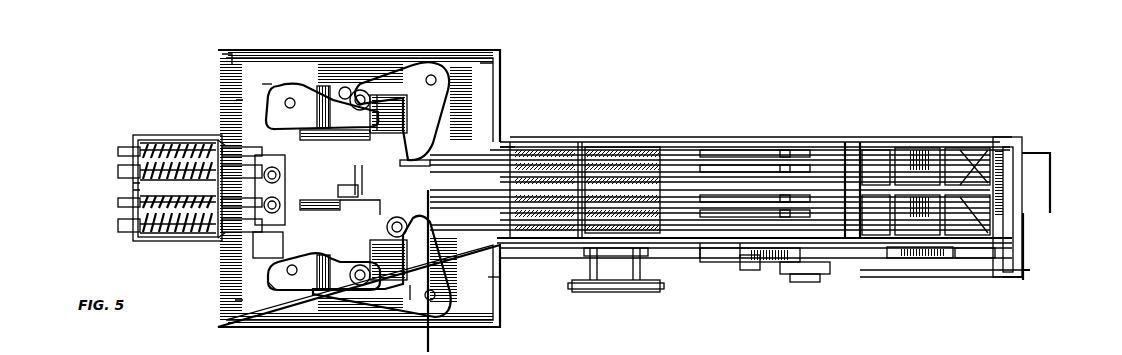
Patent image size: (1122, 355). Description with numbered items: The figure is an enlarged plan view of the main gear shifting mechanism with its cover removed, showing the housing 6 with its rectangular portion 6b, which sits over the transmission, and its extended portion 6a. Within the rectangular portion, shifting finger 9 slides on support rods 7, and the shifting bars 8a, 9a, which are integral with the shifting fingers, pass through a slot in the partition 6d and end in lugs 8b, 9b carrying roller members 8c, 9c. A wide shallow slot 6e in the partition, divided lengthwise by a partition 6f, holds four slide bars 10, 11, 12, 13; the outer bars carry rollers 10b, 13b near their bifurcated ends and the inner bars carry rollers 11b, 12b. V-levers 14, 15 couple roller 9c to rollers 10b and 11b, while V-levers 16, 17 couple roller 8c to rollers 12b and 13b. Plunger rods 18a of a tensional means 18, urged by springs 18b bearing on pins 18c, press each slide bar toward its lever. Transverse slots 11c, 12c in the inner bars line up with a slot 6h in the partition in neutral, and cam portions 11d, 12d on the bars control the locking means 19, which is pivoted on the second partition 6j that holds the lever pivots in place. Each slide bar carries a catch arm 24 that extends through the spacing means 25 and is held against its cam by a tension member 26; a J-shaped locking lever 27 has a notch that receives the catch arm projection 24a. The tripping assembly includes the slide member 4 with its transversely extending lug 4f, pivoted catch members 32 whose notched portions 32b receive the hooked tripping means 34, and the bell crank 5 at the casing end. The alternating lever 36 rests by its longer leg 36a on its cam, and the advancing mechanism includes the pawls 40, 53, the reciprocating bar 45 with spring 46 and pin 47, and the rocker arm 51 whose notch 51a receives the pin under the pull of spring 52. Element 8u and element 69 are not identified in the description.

The slide member 4 is at (1040, 175).
The transversely extending lug 4f is at (997, 148).
The bell crank 5 is at (795, 246).
The housing 6 is at (220, 70).
The extended portion of housing 6a is at (858, 155).
The rectangular portion of housing 6b is at (272, 84).
The partition 6d is at (236, 100).
The wide shallow slot 6e is at (222, 142).
The partition 6f is at (490, 150).
The slot in partition 6h is at (350, 190).
The second partition 6j is at (733, 243).
The support rods 7 is at (488, 277).
The shifting bar 8a is at (395, 282).
The lug 8b is at (365, 286).
The roller member 8c is at (325, 291).
The pin 8u is at (377, 95).
The shifting finger 9 is at (134, 203).
The shifting bar 9a is at (327, 86).
The lug 9b is at (360, 89).
The roller member 9c is at (348, 87).
The slide bar 10 is at (270, 150).
The roller 10b is at (425, 142).
The slide bar 11 is at (318, 140).
The roller 11b is at (280, 150).
The slot 11c is at (360, 162).
The cam portion 11d is at (425, 166).
The slide bar 12 is at (388, 226).
The roller 12b is at (258, 258).
The slot 12c is at (356, 212).
The cam portion 12d is at (340, 208).
The slide bar 13 is at (280, 232).
The roller 13b is at (404, 237).
The V-lever 14 is at (433, 72).
The V-lever 15 is at (278, 58).
The V-lever 16 is at (276, 290).
The V-lever 17 is at (410, 300).
The tensional means 18 is at (165, 232).
The plunger rods 18a is at (119, 150).
The springs 18b is at (148, 143).
The pins 18c is at (200, 232).
The locking means 19 is at (397, 48).
The catch arms 24 is at (718, 172).
The projection 24a is at (588, 148).
The spacing means 25 is at (626, 160).
The tension member 26 is at (598, 150).
The locking lever 27 is at (800, 172).
The catch members 32 is at (984, 150).
The notched portion 32b is at (920, 270).
The tripping means 34 is at (882, 150).
The alternating lever 36 is at (690, 165).
The longer leg of alternating lever 36a is at (728, 168).
The pawl 40 is at (926, 148).
The reciprocating bar 45 is at (572, 290).
The spring 46 is at (590, 252).
The pin 47 is at (910, 258).
The rocker arm 51 is at (815, 282).
The notch 51a is at (958, 258).
The spring 52 is at (765, 262).
The pawl 53 is at (748, 270).
The rod 69 is at (132, 185).